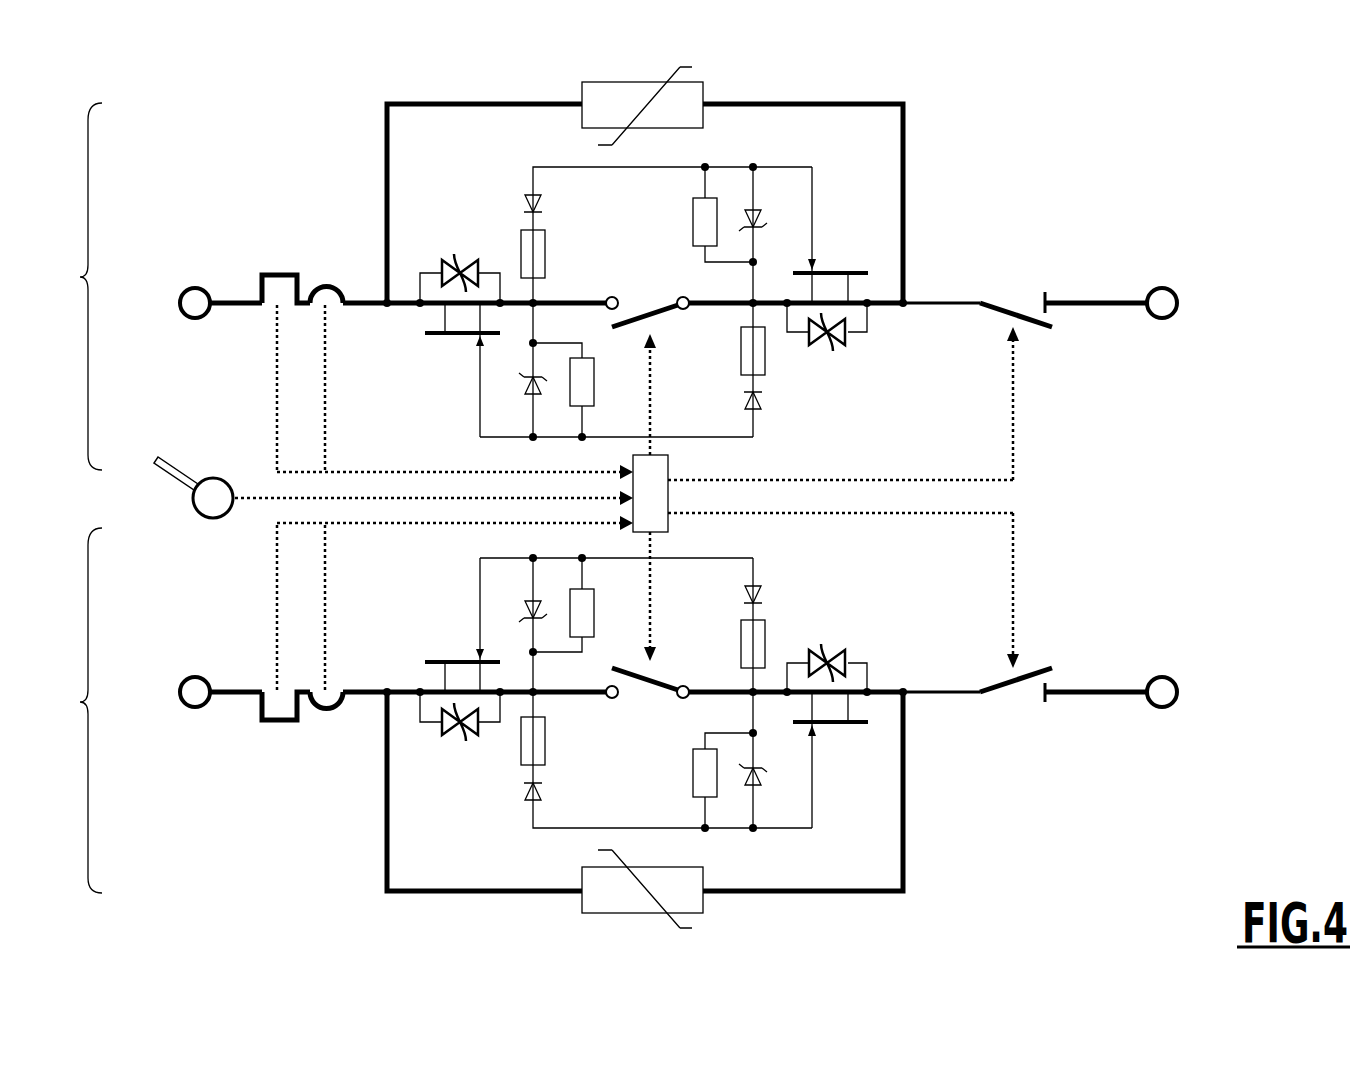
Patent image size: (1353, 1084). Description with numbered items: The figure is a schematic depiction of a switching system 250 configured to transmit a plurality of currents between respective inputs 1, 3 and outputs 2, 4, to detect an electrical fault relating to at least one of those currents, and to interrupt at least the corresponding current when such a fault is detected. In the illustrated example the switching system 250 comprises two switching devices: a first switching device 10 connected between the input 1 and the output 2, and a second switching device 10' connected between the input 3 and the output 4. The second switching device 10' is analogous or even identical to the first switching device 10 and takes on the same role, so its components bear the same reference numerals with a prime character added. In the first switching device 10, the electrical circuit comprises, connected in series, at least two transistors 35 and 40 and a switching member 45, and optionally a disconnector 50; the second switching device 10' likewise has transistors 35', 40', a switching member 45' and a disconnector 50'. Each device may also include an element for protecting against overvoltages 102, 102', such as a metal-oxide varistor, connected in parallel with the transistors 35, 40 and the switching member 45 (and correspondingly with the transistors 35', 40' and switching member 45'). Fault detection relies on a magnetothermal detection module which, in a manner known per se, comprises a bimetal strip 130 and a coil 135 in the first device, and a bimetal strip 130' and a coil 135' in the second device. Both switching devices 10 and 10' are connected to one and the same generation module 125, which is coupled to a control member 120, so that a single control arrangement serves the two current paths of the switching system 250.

The input 1 is at (172, 692).
The output 2 is at (1183, 692).
The input 3 is at (170, 303).
The output 4 is at (1183, 303).
The first switching device 10 is at (76, 710).
The second switching device 10' is at (73, 286).
The transistor 35 is at (438, 649).
The transistor 35' is at (435, 345).
The transistor 40 is at (829, 736).
The transistor 40' is at (834, 302).
The switching member 45 is at (647, 649).
The switching member 45' is at (647, 336).
The disconnector 50 is at (1036, 658).
The disconnector 50' is at (1050, 346).
The element for protecting against overvoltages 102 is at (640, 906).
The element for protecting against overvoltages 102' is at (642, 94).
The control member 120 is at (201, 530).
The generation module 125 is at (669, 521).
The bimetal strip 130 is at (230, 652).
The bimetal strip 130' is at (249, 322).
The coil 135 is at (281, 681).
The coil 135' is at (321, 302).
The switching system 250 is at (1041, 180).